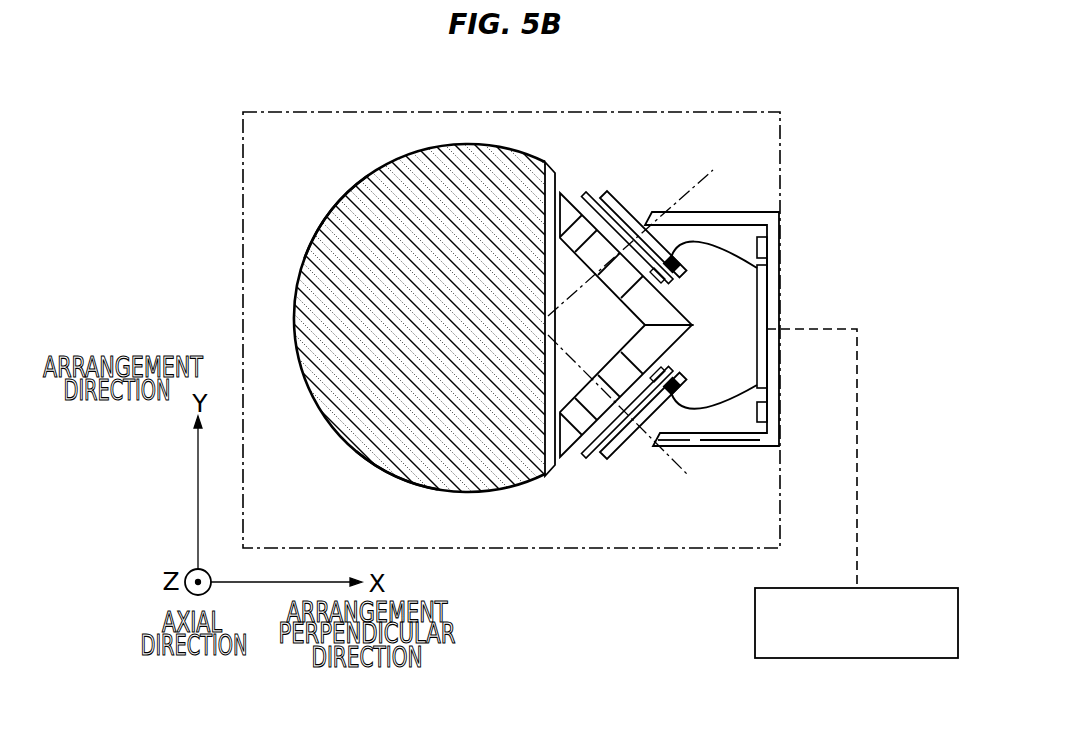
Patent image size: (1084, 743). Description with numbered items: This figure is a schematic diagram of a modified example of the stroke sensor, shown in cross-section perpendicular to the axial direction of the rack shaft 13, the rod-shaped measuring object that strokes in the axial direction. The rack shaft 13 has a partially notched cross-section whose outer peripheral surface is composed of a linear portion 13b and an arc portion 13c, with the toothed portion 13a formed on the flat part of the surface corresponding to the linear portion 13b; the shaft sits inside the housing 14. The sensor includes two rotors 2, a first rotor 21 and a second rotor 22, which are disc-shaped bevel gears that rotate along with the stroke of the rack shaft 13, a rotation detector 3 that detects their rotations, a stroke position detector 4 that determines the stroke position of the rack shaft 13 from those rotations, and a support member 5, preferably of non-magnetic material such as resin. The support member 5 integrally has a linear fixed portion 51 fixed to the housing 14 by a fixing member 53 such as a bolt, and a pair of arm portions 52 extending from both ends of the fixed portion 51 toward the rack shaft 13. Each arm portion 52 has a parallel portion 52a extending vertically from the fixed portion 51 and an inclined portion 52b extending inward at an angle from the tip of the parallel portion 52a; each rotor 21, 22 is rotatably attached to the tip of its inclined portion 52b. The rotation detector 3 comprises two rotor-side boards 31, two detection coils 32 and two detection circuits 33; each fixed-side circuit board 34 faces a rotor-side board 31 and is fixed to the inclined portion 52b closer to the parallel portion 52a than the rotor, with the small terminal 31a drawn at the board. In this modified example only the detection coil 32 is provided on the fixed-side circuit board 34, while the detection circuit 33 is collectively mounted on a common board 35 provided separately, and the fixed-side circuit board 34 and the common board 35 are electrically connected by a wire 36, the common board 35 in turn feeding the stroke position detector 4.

The housing 14 is at (243, 112).
The rack shaft 13 is at (354, 162).
The toothed portion 13a is at (545, 382).
The linear portion 13b is at (549, 313).
The arc portion 13c is at (326, 228).
The second rotor 22 is at (577, 203).
The first rotor 21 is at (562, 450).
The rotor-side board 31 is at (592, 200).
The electrode terminal 31a is at (672, 288).
The fixed-side circuit board 34 is at (628, 200).
The detection coil 32 is at (682, 264).
The rotation detector 3 is at (664, 188).
The rotor 2 is at (706, 340).
The support member 5 is at (725, 336).
The arm portion 52 is at (738, 212).
The parallel portion 52a is at (727, 440).
The inclined portion 52b is at (648, 440).
The fixing member 53 is at (760, 243).
The fixed portion 51 is at (773, 262).
The detection circuit 33 is at (806, 323).
The common board 35 is at (760, 322).
The wire 36 is at (730, 403).
The stroke position detector 4 is at (935, 589).